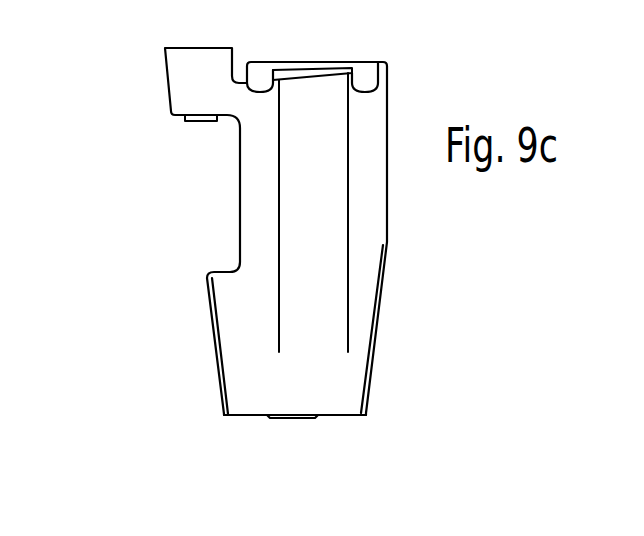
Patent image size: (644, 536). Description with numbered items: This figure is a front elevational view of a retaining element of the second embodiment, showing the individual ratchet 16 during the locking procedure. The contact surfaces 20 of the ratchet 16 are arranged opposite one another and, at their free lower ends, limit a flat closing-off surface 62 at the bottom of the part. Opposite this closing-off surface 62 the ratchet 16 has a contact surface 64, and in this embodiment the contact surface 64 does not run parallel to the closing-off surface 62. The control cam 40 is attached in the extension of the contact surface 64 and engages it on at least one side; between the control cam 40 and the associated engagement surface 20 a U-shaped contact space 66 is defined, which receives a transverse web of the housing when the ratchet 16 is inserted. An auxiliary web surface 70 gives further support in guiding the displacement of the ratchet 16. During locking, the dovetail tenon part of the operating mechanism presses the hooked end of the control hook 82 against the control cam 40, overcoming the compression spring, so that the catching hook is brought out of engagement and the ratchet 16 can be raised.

The ratchet 16 is at (333, 378).
The contact surface 20 is at (217, 352).
The control cam 40 is at (190, 93).
The closing-off surface 62 is at (340, 415).
The contact surface 64 is at (313, 73).
The U-shaped contact space 66 is at (230, 252).
The auxiliary web surface 70 is at (328, 242).
The control hook 82 is at (207, 122).